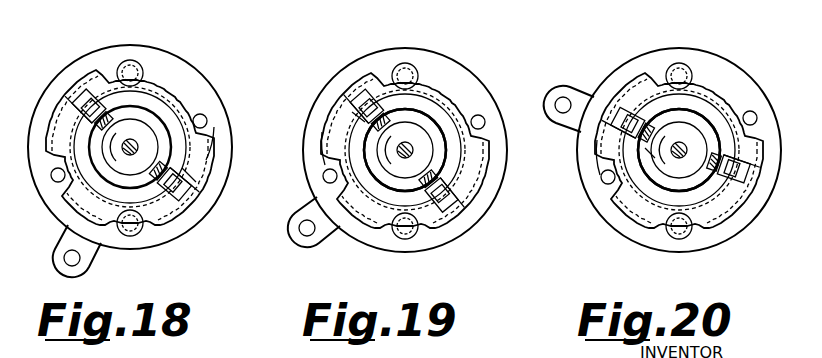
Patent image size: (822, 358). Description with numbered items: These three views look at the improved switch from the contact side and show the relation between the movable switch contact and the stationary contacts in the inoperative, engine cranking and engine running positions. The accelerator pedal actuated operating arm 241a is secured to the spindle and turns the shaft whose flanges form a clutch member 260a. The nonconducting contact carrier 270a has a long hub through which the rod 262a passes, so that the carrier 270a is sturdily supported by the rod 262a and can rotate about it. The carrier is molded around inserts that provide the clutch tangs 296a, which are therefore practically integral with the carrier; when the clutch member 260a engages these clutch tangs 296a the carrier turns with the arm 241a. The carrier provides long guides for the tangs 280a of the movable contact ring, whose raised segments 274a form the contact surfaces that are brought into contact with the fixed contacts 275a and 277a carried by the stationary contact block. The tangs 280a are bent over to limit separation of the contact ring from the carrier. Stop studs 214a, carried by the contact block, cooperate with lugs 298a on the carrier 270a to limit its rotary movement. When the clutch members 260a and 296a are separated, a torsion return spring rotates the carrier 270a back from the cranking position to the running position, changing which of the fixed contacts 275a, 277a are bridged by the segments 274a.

In FIG. 18, the stop studs 214a is at (206, 120).
In FIG. 19, the stop studs 214a is at (481, 120).
In FIG. 20, the stop studs 214a is at (751, 111).
In FIG. 18, the operating arm 241a is at (62, 238).
In FIG. 19, the operating arm 241a is at (300, 245).
In FIG. 20, the operating arm 241a is at (565, 88).
In FIG. 19, the clutch member 260a is at (378, 172).
In FIG. 20, the clutch member 260a is at (662, 232).
In FIG. 18, the rod 262a is at (134, 145).
In FIG. 19, the rod 262a is at (400, 158).
In FIG. 20, the rod 262a is at (675, 158).
In FIG. 19, the contact carrier 270a is at (448, 105).
In FIG. 18, the raised segments 274a is at (73, 108).
In FIG. 19, the raised segments 274a is at (360, 100).
In FIG. 20, the raised segments 274a is at (620, 110).
In FIG. 18, the fixed contact 275a is at (131, 70).
In FIG. 19, the fixed contact 275a is at (414, 75).
In FIG. 20, the fixed contact 275a is at (682, 73).
In FIG. 18, the fixed contact 277a is at (131, 225).
In FIG. 19, the fixed contact 277a is at (393, 224).
In FIG. 20, the fixed contact 277a is at (686, 228).
In FIG. 18, the tangs 280a is at (130, 147).
In FIG. 19, the tangs 280a is at (370, 98).
In FIG. 20, the tangs 280a is at (635, 127).
In FIG. 18, the clutch tangs 296a is at (190, 177).
In FIG. 19, the clutch tangs 296a is at (352, 112).
In FIG. 20, the clutch tangs 296a is at (645, 148).
In FIG. 18, the lugs 298a is at (214, 127).
In FIG. 19, the lugs 298a is at (330, 140).
In FIG. 20, the lugs 298a is at (596, 162).